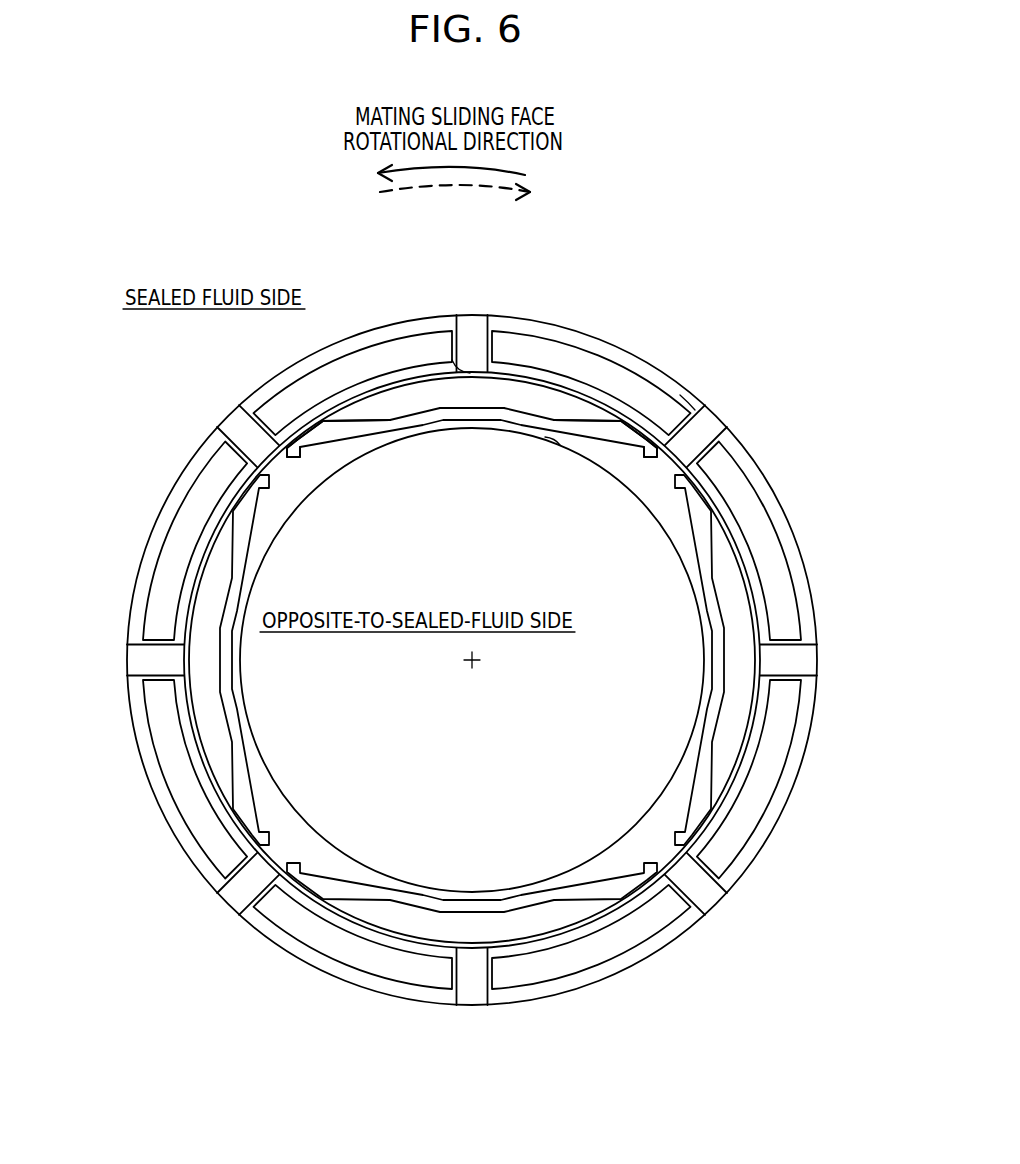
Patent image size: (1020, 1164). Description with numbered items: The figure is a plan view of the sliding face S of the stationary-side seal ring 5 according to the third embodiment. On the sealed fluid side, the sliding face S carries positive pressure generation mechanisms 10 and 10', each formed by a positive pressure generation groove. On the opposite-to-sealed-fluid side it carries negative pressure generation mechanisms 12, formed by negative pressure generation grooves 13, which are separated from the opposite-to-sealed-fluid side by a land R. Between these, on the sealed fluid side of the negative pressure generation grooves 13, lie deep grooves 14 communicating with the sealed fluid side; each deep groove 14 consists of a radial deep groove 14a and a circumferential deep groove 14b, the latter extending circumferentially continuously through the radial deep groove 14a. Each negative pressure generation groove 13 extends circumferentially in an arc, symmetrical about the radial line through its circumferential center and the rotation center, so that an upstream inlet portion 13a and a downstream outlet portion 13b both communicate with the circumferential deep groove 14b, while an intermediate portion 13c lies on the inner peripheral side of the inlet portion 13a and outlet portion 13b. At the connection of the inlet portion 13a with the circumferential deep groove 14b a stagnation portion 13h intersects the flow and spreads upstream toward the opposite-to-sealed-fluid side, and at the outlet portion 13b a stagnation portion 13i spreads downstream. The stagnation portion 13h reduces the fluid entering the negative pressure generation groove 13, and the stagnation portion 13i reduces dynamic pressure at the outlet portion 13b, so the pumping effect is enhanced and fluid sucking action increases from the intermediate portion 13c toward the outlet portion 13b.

The stationary-side seal ring 5 is at (650, 352).
The positive pressure generation mechanism 10 is at (472, 596).
The positive pressure generation mechanism 10' is at (472, 600).
The negative pressure generation mechanism 12 is at (428, 423).
The negative pressure generation groove 13 is at (453, 417).
The inlet portion 13a is at (613, 435).
The outlet portion 13b is at (340, 437).
The intermediate portion 13c is at (497, 412).
The stagnation portion 13h is at (657, 450).
The stagnation portion 13i is at (287, 456).
The deep groove 14 is at (434, 606).
The radial deep groove 14a is at (478, 335).
The circumferential deep groove 14b is at (541, 372).
The land R is at (457, 388).
The sliding face S is at (690, 402).